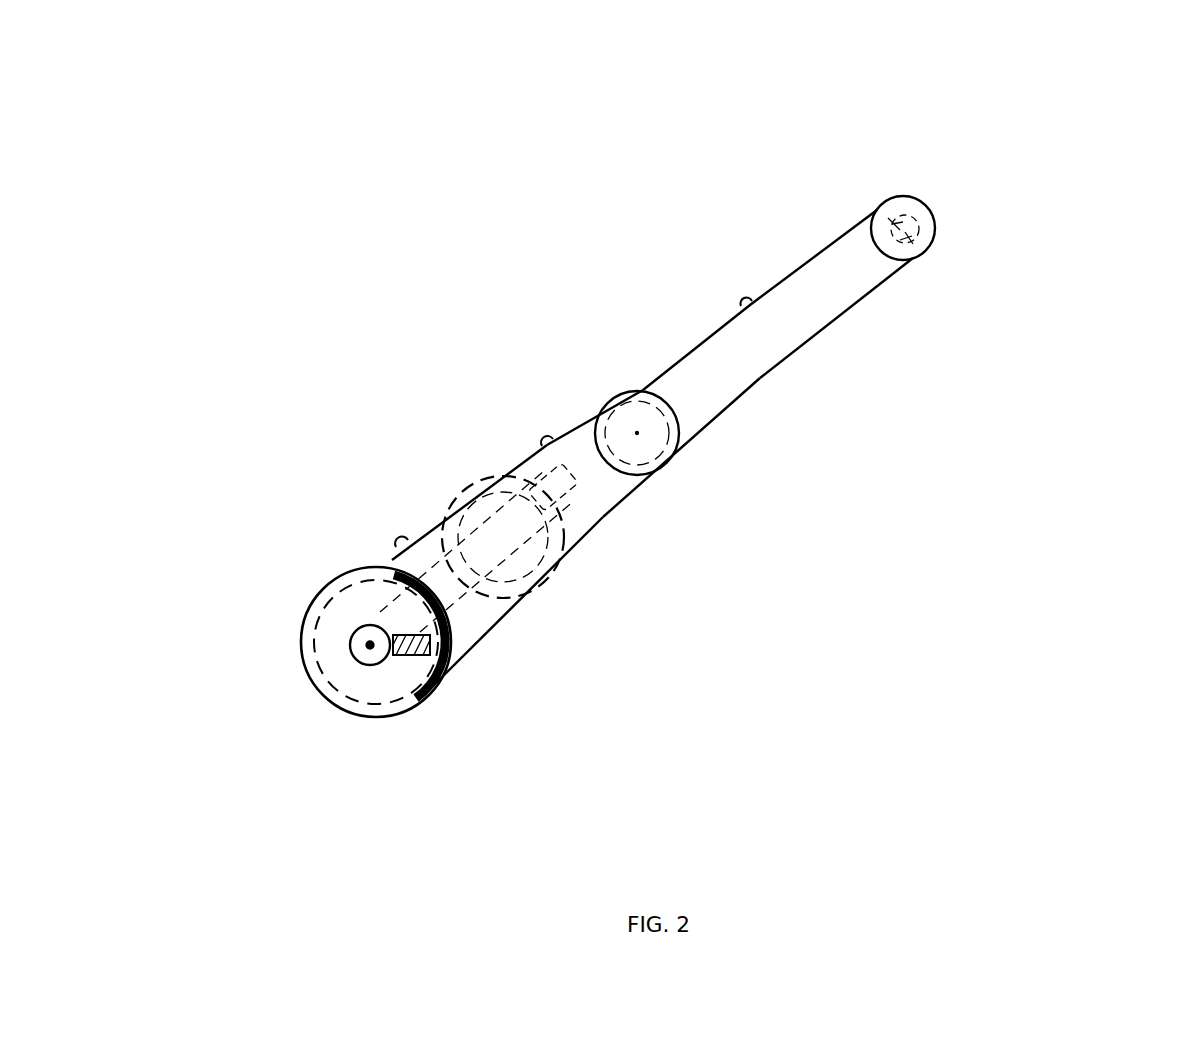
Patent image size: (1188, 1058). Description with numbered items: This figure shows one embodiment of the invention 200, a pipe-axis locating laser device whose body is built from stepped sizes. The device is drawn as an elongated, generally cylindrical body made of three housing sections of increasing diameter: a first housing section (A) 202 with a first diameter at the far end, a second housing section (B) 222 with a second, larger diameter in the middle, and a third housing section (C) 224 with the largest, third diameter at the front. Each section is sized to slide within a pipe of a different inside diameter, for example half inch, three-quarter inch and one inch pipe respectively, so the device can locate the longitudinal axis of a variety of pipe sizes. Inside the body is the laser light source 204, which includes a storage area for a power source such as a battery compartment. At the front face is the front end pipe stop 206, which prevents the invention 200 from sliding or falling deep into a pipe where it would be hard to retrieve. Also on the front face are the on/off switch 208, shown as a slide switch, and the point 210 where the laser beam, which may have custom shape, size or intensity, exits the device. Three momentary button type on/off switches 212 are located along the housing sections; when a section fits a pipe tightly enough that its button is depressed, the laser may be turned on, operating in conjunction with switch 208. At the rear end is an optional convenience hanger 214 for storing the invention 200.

The invention 200 is at (995, 91).
The first housing section (A) 202 is at (1160, 330).
The laser light source 204 is at (1115, 535).
The front end pipe stop 206 is at (850, 616).
The on/off switch 208 is at (835, 706).
The laser beam exit 210 is at (930, 765).
The momentary button type on/off switches 212 is at (728, 308).
The convenience hanger 214 is at (1155, 228).
The second housing section (B) 222 is at (1160, 484).
The third housing section (C) 224 is at (401, 557).